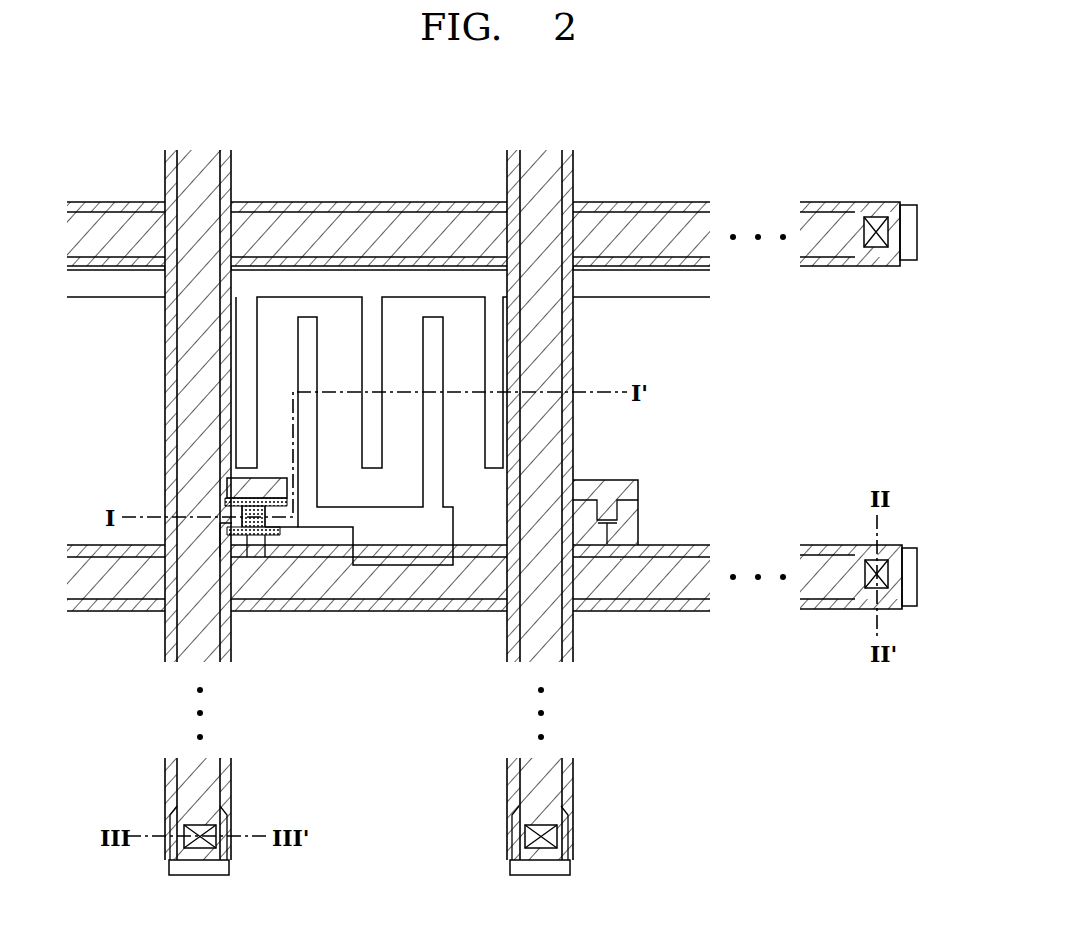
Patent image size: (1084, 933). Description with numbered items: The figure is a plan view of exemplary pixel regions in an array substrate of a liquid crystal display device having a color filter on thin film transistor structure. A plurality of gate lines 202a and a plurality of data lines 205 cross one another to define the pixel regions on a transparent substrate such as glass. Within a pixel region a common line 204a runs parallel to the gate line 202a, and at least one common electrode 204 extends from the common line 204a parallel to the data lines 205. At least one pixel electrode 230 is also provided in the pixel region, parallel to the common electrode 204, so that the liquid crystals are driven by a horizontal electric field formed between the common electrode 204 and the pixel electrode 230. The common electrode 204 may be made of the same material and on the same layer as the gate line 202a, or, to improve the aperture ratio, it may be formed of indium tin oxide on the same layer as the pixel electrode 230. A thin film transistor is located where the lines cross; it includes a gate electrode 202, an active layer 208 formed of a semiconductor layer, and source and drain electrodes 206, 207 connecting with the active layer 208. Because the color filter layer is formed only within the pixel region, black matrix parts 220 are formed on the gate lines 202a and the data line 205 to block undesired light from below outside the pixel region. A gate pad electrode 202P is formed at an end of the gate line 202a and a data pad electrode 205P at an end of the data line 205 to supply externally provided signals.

The gate electrode 202 is at (178, 640).
The gate line 202a is at (670, 225).
The gate pad electrode 202P is at (907, 212).
The common electrode 204 is at (497, 345).
The common line 204a is at (691, 291).
The data line 205 is at (543, 630).
The data pad electrode 205P is at (229, 867).
The source electrode 206 is at (225, 499).
The drain electrode 207 is at (303, 547).
The active layer 208 is at (248, 545).
The black matrix part 220 is at (232, 783).
The pixel electrode 230 is at (435, 333).